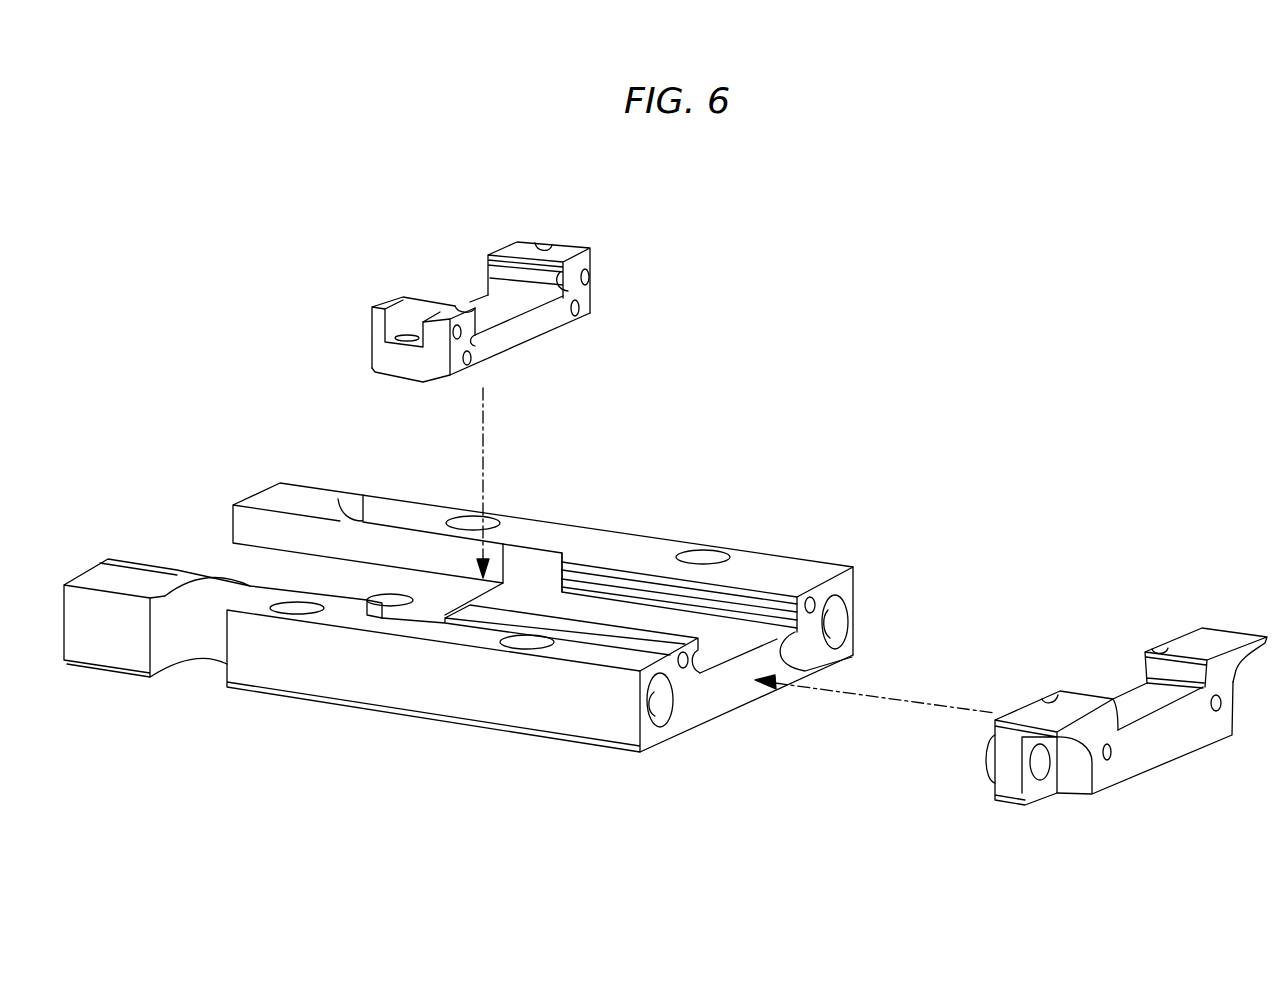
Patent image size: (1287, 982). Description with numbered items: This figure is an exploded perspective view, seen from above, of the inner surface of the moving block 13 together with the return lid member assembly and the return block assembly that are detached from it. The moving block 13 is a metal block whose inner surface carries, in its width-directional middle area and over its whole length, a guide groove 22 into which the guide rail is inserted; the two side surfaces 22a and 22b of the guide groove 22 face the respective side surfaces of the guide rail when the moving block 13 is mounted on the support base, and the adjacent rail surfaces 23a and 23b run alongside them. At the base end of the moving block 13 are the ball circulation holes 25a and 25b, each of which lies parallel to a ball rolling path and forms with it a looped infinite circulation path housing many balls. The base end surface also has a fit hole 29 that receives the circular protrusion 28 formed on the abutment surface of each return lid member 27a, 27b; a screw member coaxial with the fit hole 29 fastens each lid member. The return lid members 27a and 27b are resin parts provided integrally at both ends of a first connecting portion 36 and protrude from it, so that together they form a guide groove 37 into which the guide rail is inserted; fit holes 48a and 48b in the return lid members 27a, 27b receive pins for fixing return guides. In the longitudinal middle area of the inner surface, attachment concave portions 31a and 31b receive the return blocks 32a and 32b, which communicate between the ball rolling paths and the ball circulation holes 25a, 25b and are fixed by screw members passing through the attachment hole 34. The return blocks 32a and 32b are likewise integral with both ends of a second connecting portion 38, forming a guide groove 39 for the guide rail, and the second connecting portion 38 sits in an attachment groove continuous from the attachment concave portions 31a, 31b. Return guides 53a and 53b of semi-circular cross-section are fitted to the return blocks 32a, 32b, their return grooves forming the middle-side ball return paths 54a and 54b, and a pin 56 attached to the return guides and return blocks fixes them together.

The moving block 13 is at (277, 657).
The guide groove 22 is at (636, 613).
The side surface of guide groove 22a is at (705, 672).
The side surface of guide groove 22b is at (290, 528).
The first guide rail 23a is at (733, 658).
The second guide rail 23b is at (770, 605).
The ball circulation hole 25a is at (685, 669).
The ball circulation hole 25b is at (812, 598).
The return lid member 27a is at (1043, 800).
The return lid member 27b is at (1214, 670).
The circular protrusion 28 is at (988, 759).
The fit hole 29 is at (840, 621).
The attachment concave portion 31a is at (397, 614).
The attachment concave portion 31b is at (541, 562).
The return block 32a is at (415, 312).
The return block 32b is at (516, 247).
The attachment hole 34 is at (410, 337).
The first connecting portion 36 is at (1167, 745).
The guide groove 37 is at (1127, 708).
The second connecting portion 38 is at (546, 323).
The guide groove 39 is at (496, 312).
The fit hole 48a is at (1107, 762).
The fit hole 48b is at (1216, 712).
The return guide 53a is at (1050, 692).
The return guide 53b is at (1161, 648).
The middle-side ball return path 54a is at (465, 308).
The middle-side ball return path 54b is at (590, 276).
The pin 56 is at (580, 318).